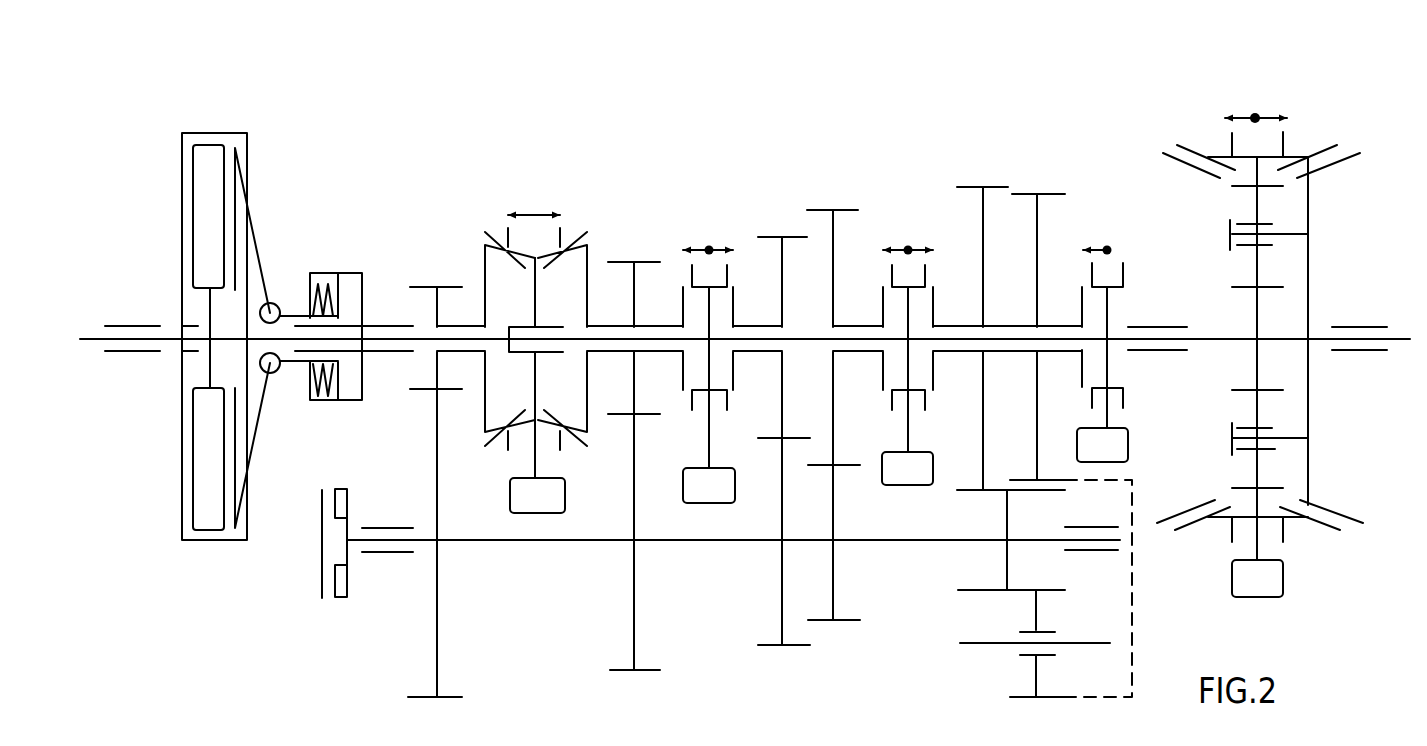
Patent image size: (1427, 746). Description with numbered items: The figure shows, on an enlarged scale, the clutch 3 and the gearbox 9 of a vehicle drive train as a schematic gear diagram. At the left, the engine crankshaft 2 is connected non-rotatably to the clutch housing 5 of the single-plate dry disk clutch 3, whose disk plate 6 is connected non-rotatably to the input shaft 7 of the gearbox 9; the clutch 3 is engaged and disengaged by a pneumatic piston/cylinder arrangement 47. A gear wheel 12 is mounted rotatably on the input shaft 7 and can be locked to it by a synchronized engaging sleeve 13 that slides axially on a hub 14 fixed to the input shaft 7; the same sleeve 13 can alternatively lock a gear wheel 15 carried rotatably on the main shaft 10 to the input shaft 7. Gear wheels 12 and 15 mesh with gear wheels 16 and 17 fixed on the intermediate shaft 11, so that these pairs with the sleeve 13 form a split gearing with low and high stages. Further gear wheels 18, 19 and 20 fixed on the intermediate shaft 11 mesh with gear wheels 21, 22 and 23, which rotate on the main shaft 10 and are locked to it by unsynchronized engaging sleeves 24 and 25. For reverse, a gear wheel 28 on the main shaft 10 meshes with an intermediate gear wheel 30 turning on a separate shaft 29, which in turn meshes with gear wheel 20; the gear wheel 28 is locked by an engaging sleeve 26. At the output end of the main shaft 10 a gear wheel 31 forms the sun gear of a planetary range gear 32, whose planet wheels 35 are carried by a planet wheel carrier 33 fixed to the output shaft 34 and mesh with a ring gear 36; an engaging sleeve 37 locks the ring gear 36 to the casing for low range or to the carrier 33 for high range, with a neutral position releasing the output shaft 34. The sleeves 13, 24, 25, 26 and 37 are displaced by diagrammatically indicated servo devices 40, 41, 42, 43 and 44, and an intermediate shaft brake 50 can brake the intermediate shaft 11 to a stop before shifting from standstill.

The crankshaft 2 is at (80, 338).
The clutch 3 is at (216, 314).
The clutch housing 5 is at (182, 166).
The disk plate 6 is at (204, 233).
The input shaft 7 is at (236, 338).
The gearbox 9 is at (752, 129).
The main shaft 10 is at (1205, 338).
The intermediate shaft 11 is at (545, 540).
The gear wheel 12 is at (439, 287).
The engaging sleeve 13 is at (568, 236).
The hub 14 is at (535, 297).
The gear wheel 15 is at (627, 262).
The gear wheel 16 is at (437, 623).
The gear wheel 17 is at (634, 612).
The gear wheel 18 is at (783, 602).
The gear wheel 19 is at (835, 575).
The gear wheel 20 is at (960, 593).
The gear wheel 21 is at (766, 215).
The gear wheel 22 is at (838, 210).
The gear wheel 23 is at (970, 186).
The engaging sleeve 24 is at (728, 278).
The engaging sleeve 25 is at (927, 278).
The engaging sleeve 26 is at (1090, 277).
The gear wheel 28 is at (1042, 193).
The separate shaft 29 is at (977, 643).
The intermediate gear wheel 30 is at (1038, 615).
The gear wheel 31 is at (1233, 390).
The range gear 32 is at (1267, 308).
The planet wheel carrier 33 is at (1310, 198).
The output shaft 34 is at (1403, 340).
The planet wheels 35 is at (1278, 288).
The ring gear 36 is at (1262, 488).
The engaging sleeve 37 is at (1285, 143).
The servo device 40 is at (537, 495).
The servo device 41 is at (709, 485).
The servo device 42 is at (907, 468).
The servo device 43 is at (1102, 445).
The servo device 44 is at (1257, 578).
The pneumatic piston/cylinder arrangement 47 is at (348, 400).
The intermediate shaft brake 50 is at (311, 556).